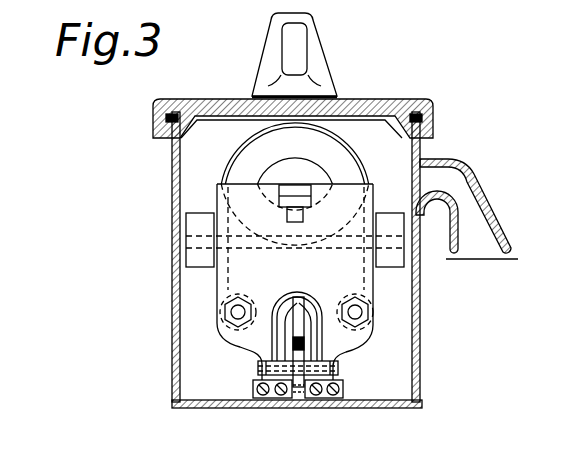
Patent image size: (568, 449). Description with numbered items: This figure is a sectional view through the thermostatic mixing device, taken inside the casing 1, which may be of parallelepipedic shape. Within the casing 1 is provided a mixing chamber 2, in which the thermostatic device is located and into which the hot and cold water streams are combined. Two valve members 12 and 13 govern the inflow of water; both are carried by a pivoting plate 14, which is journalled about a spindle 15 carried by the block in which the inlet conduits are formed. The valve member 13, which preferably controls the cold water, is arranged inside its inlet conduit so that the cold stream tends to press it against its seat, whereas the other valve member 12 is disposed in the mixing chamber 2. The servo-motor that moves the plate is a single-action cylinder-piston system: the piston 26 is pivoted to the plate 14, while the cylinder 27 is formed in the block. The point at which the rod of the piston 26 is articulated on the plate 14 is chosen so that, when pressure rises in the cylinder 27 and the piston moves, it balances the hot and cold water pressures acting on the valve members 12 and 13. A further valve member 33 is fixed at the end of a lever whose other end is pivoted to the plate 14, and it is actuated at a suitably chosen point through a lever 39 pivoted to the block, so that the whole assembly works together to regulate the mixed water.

The casing 1 is at (421, 367).
The mixing chamber 2 is at (383, 372).
The valve member 12 is at (366, 322).
The valve member 13 is at (222, 324).
The pivoting plate 14 is at (335, 275).
The spindle 15 is at (196, 241).
The piston 26 is at (220, 178).
The cylinder 27 is at (242, 172).
The valve member 33 is at (304, 322).
The lever 39 is at (303, 350).